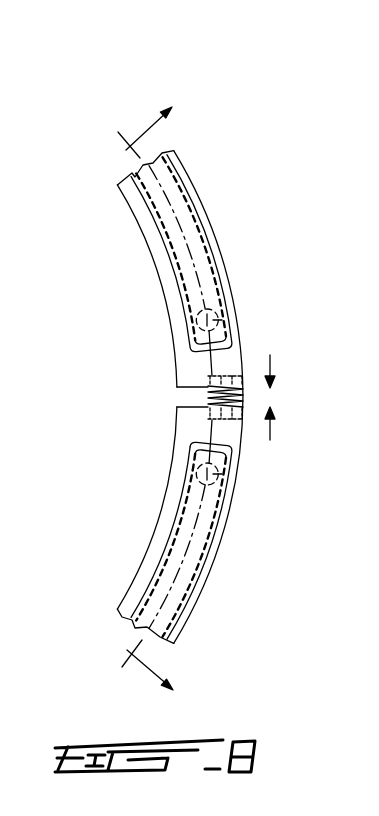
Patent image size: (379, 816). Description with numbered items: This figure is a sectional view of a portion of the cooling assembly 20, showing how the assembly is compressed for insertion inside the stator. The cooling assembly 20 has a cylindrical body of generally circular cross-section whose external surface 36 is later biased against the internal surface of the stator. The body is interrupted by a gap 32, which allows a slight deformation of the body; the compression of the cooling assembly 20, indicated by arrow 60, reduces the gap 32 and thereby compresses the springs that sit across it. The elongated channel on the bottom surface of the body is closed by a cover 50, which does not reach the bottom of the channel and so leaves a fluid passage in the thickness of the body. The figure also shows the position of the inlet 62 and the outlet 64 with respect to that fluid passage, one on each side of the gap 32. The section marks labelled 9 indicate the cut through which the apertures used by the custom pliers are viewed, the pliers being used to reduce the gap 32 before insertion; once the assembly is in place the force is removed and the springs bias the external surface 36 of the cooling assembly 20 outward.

The cooling assembly 20 is at (213, 375).
The external surface 36 is at (208, 578).
The cover 50 is at (197, 243).
The inlet 62 is at (220, 306).
The outlet 64 is at (220, 480).
The gap 32 is at (187, 398).
The arrow 60 is at (270, 440).
The section line 9- 9 is at (135, 398).